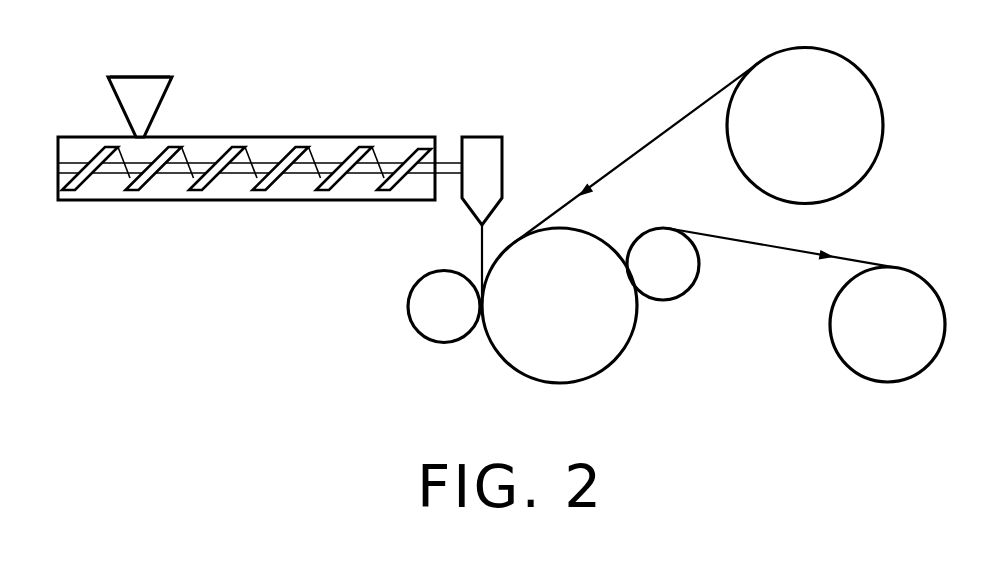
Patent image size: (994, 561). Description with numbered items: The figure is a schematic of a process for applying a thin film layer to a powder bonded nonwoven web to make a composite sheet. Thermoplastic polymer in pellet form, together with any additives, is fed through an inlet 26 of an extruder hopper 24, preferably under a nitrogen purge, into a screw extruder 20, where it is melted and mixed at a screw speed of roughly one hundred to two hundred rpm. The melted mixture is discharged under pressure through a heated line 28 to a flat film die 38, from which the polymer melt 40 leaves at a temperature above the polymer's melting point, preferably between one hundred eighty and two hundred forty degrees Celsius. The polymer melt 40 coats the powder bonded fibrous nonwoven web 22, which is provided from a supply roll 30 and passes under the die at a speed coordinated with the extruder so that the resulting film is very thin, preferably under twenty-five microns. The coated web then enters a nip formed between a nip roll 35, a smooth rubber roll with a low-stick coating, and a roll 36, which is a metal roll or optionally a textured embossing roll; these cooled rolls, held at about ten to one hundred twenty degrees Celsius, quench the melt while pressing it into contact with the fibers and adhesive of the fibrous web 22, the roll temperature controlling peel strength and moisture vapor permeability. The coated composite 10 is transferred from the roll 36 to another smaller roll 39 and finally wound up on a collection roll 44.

The coated composite 10 is at (725, 238).
The screw extruder 20 is at (352, 137).
The powder bonded fibrous nonwoven web 22 is at (700, 106).
The extruder hopper 24 is at (163, 101).
The inlet 26 is at (143, 76).
The heated line 28 is at (453, 181).
The supply roll 30 is at (850, 62).
The nip roll 35 is at (422, 334).
The roll 36 is at (608, 368).
The flat film die 38 is at (504, 137).
The smaller roll 39 is at (665, 301).
The polymer melt 40 is at (480, 253).
The collection roll 44 is at (858, 372).